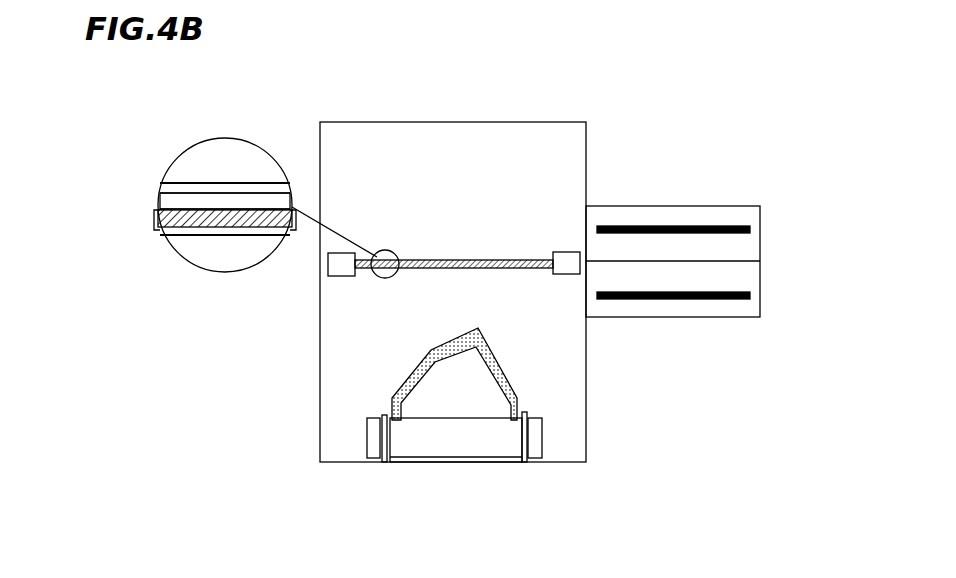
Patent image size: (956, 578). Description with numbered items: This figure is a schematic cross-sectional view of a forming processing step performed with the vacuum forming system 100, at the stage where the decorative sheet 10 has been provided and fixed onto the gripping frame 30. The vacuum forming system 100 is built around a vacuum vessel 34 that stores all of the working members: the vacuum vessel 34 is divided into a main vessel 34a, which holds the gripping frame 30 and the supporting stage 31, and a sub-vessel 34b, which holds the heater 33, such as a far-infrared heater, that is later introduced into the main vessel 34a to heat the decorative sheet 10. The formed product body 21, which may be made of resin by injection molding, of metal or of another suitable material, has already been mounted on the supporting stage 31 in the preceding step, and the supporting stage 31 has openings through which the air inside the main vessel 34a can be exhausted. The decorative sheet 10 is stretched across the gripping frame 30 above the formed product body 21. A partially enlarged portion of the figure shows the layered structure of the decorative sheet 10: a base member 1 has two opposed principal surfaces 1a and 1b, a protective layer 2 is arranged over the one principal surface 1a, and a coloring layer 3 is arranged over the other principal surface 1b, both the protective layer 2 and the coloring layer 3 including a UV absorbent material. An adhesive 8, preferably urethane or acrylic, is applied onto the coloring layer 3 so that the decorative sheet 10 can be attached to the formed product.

The base member 1 is at (162, 202).
The principal surface 1a is at (197, 192).
The principal surface 1b is at (248, 208).
The protective layer 2 is at (162, 183).
The coloring layer 3 is at (155, 220).
The adhesive 8 is at (185, 228).
The decorative sheet 10 is at (465, 257).
The formed product body 21 is at (458, 360).
The gripping frame 30 is at (342, 272).
The supporting stage 31 is at (450, 450).
The heater 33 is at (727, 232).
The vacuum vessel 34 is at (710, 113).
The main vessel 34a is at (597, 175).
The sub-vessel 34b is at (675, 202).
The vacuum forming system 100 is at (757, 140).